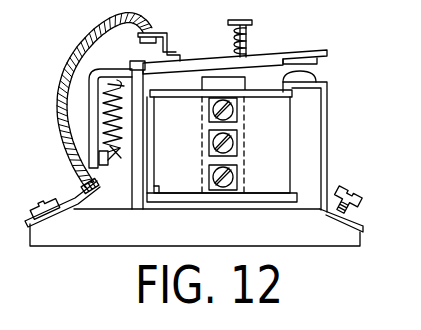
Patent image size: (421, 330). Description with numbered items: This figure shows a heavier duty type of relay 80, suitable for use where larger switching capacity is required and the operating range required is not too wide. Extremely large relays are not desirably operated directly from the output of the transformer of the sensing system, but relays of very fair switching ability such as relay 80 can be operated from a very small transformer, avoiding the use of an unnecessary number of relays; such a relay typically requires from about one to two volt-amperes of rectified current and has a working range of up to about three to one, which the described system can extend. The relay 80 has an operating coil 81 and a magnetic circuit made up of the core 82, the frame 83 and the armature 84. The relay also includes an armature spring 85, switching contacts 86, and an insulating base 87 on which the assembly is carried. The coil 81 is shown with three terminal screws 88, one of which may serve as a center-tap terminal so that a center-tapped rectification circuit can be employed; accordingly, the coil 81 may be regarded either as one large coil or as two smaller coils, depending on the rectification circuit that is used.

The relay 80 is at (334, 130).
The operating coil 81 is at (268, 168).
The core 82 is at (244, 143).
The frame 83 is at (169, 202).
The armature 84 is at (218, 60).
The armature spring 85 is at (105, 107).
The switching contacts 86 is at (303, 79).
The insulating base 87 is at (327, 239).
The terminal screws 88 is at (238, 108).